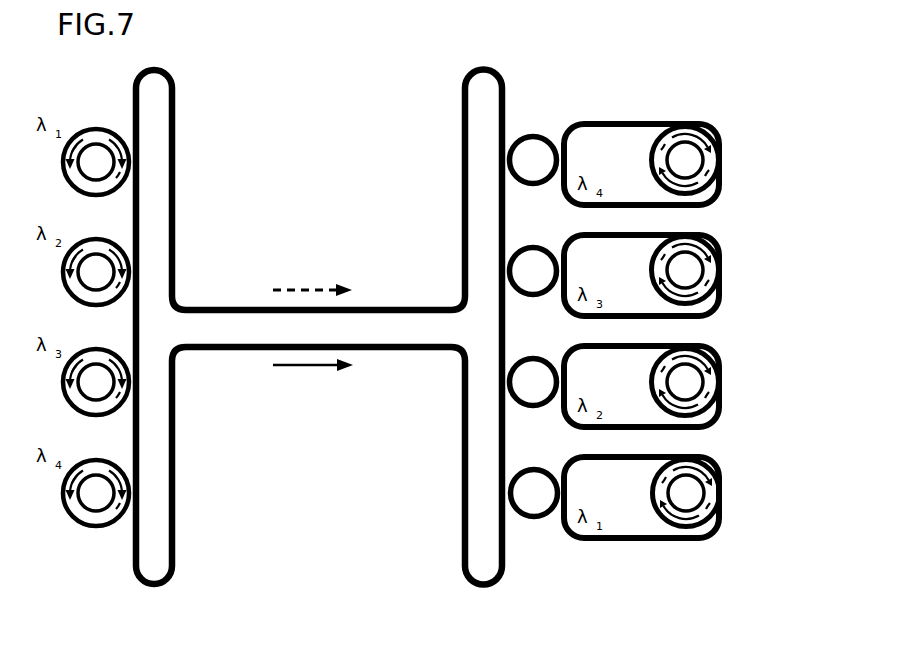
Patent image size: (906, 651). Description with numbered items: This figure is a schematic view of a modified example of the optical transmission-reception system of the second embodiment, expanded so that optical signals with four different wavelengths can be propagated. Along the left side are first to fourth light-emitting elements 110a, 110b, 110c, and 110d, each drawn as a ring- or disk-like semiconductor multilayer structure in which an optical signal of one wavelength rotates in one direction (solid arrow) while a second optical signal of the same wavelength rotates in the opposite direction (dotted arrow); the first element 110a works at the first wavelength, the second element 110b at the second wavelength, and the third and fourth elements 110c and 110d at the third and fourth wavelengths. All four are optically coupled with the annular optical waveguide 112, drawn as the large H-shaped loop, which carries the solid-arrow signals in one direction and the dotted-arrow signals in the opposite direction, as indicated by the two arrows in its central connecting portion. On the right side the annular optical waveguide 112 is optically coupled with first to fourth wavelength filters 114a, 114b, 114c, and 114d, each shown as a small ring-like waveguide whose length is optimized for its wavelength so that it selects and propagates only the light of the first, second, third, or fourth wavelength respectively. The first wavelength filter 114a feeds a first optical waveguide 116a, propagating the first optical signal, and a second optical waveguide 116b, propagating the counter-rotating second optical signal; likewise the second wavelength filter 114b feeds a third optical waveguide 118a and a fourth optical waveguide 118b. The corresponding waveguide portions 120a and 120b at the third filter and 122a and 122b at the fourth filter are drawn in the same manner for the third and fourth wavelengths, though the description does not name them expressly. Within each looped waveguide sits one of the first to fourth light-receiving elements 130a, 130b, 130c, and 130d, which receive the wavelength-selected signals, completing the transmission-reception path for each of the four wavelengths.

The first light-emitting element 110a is at (97, 127).
The second light-emitting element 110b is at (97, 237).
The third light-emitting element 110c is at (97, 347).
The fourth light-emitting element 110d is at (97, 458).
The annular optical waveguide 112 is at (176, 203).
The first wavelength filter 114a is at (533, 466).
The second wavelength filter 114b is at (531, 355).
The third wavelength filter 114c is at (531, 244).
The fourth wavelength filter 114d is at (531, 133).
The first optical waveguide 116a is at (724, 535).
The second optical waveguide 116b is at (614, 461).
The third optical waveguide 118a is at (724, 425).
The fourth optical waveguide 118b is at (609, 350).
The loop waveguide 120a is at (724, 313).
The waveguide portion 120b is at (609, 239).
The loop waveguide 122a is at (721, 203).
The waveguide portion 122b is at (607, 129).
The first light-receiving element 130a is at (724, 498).
The second light-receiving element 130b is at (722, 387).
The third light-receiving element 130c is at (722, 276).
The fourth light-receiving element 130d is at (720, 166).